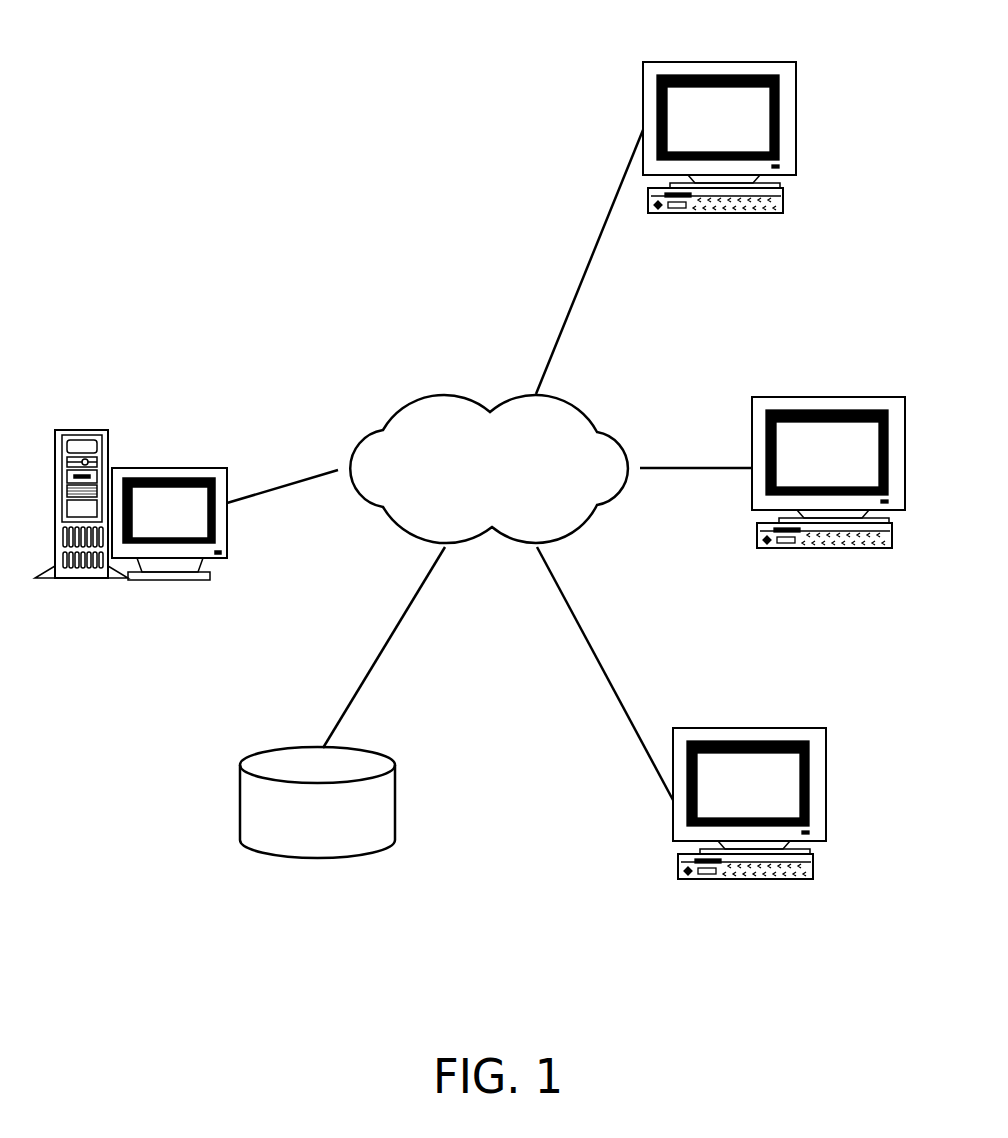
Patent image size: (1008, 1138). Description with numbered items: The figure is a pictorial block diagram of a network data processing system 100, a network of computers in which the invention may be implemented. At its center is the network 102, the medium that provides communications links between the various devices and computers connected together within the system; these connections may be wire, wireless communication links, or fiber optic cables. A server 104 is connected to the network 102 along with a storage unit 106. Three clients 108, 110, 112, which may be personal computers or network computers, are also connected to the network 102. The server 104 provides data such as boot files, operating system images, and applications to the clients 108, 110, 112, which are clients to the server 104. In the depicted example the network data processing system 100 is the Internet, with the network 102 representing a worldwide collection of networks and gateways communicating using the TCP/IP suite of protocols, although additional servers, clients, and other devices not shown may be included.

The network data processing system 100 is at (505, 809).
The network 102 is at (447, 393).
The server 104 is at (130, 473).
The storage unit 106 is at (298, 847).
The client 108 is at (652, 72).
The client 110 is at (762, 407).
The client 112 is at (817, 740).